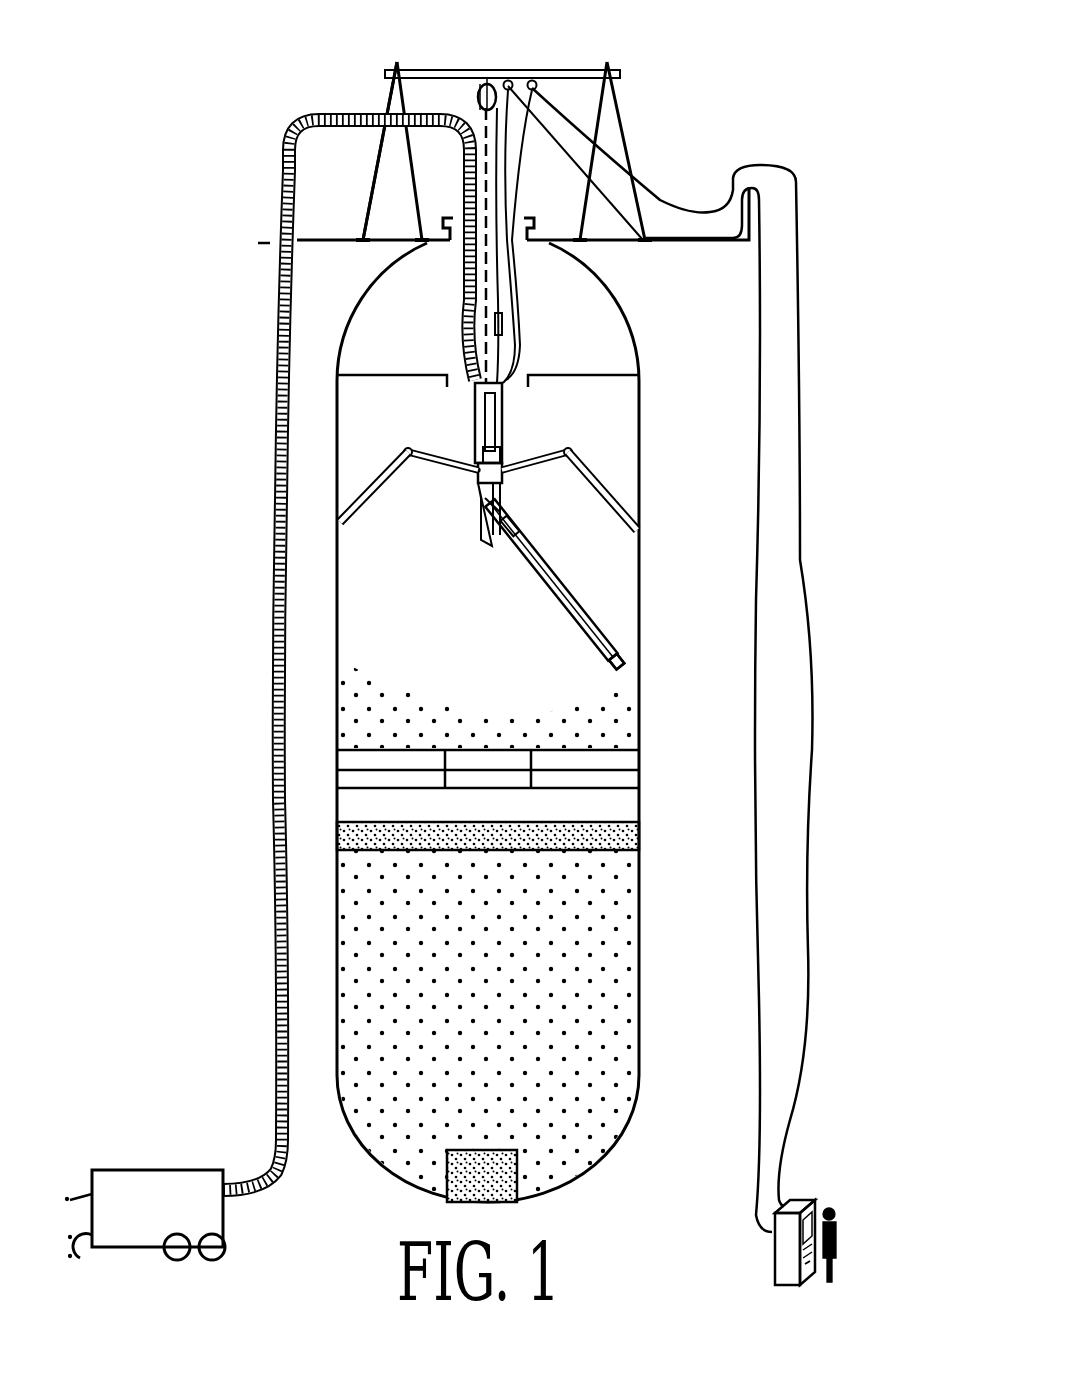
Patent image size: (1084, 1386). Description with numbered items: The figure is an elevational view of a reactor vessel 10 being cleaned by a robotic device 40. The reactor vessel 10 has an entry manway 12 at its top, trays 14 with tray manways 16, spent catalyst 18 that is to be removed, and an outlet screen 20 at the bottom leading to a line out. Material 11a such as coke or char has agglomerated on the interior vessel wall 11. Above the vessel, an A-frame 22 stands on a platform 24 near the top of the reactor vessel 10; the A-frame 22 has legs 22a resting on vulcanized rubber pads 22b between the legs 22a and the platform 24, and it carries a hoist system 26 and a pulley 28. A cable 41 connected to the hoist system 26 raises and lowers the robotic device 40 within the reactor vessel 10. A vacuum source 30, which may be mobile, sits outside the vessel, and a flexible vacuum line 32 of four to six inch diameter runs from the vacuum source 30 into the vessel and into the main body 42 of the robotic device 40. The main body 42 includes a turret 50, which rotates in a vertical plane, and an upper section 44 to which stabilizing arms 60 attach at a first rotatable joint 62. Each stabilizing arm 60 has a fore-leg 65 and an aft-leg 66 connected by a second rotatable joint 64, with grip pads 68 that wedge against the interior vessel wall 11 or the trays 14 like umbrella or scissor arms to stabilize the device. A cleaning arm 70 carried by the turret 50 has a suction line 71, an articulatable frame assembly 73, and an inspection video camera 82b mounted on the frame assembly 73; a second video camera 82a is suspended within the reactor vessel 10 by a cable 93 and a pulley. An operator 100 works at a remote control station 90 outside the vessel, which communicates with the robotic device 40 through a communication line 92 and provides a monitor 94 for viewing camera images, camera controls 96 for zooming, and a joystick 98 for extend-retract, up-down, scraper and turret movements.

The reactor vessel 10 is at (640, 417).
The interior vessel wall 11 is at (340, 640).
The agglomerated material 11a is at (625, 683).
The entry manway 12 is at (535, 235).
The trays 14 is at (605, 375).
The tray manways 16 is at (532, 361).
The catalyst 18 is at (648, 671).
The outlet screen 20 is at (517, 1170).
The A-frame 22 is at (615, 100).
The legs 22a is at (372, 173).
The vulcanized rubber pads 22b is at (363, 238).
The platform 24 is at (603, 238).
The hoist system 26 is at (495, 85).
The pulley 28 is at (538, 82).
The vacuum source 30 is at (125, 1190).
The vacuum line 32 is at (272, 910).
The robotic device 40 is at (455, 391).
The cable 41 is at (487, 305).
The main body 42 is at (447, 490).
The upper section 44 is at (484, 440).
The turret 50 is at (481, 522).
The stabilizing arms 60 is at (377, 490).
The first rotatable joint 62 is at (478, 476).
The second rotatable joints 64 is at (476, 465).
The fore-legs 65 is at (527, 468).
The aft-legs 66 is at (585, 473).
The grip pads 68 is at (338, 527).
The cleaning arm 70 is at (468, 570).
The suction line 71 is at (567, 603).
The articulatable frame assembly 73 is at (597, 612).
The video camera 82a is at (503, 325).
The video camera 82b is at (517, 532).
The remote control station 90 is at (802, 1183).
The communication line 92 is at (762, 828).
The cable 93 is at (808, 955).
The monitor 94 is at (812, 1210).
The camera controls 96 is at (796, 1232).
The joystick 98 is at (800, 1248).
The operator 100 is at (834, 1236).